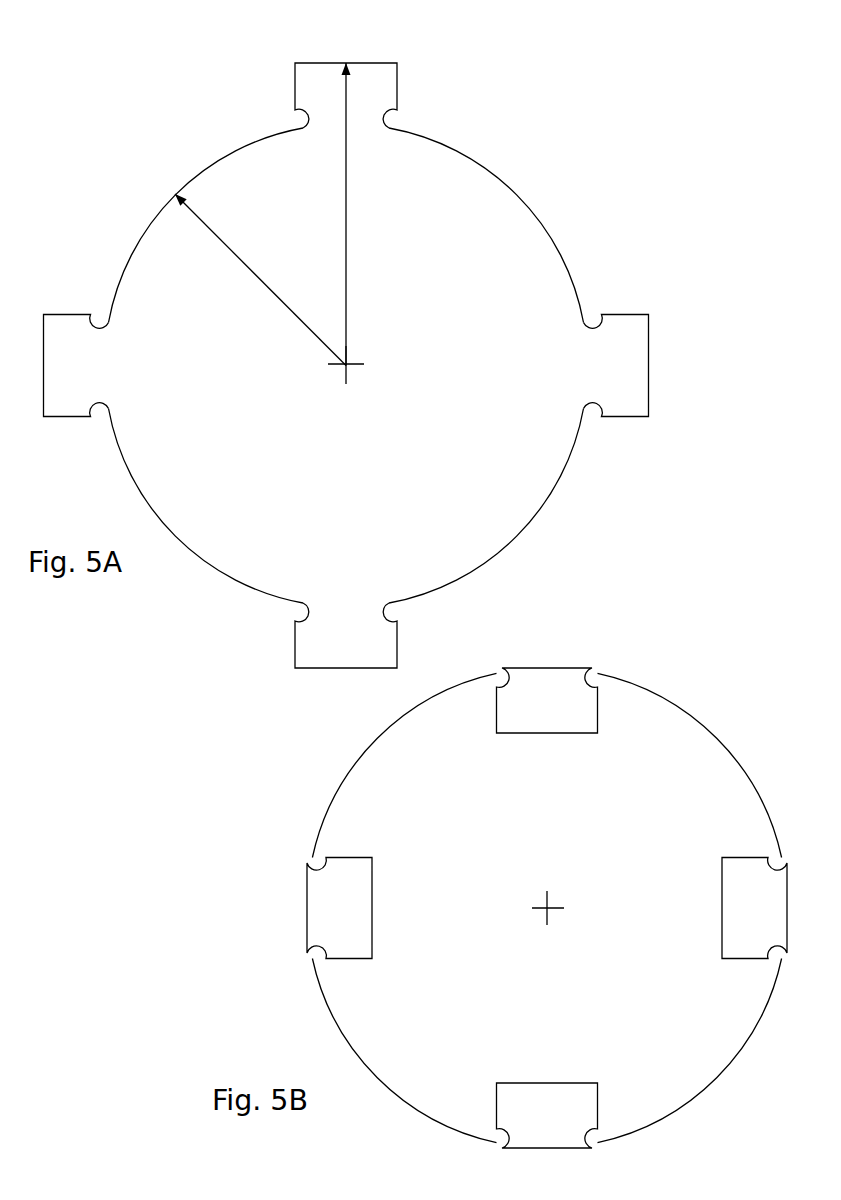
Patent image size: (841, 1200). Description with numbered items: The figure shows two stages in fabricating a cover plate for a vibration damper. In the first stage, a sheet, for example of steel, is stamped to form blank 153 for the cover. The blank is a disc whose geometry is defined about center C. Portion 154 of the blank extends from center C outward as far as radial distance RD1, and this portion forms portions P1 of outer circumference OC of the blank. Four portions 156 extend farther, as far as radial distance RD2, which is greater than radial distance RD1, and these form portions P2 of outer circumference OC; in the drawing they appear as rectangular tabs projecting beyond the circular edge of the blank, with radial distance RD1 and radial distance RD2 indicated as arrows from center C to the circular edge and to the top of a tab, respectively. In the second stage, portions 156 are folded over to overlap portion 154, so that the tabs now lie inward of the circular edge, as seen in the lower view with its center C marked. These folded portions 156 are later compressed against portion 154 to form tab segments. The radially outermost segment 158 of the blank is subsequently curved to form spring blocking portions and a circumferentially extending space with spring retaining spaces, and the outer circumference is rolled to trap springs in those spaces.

In FIG. 5A, the blank 153 is at (349, 343).
In FIG. 5B, the blank 153 is at (491, 859).
In FIG. 5A, the portion 154 is at (521, 207).
In FIG. 5B, the portion 154 is at (338, 907).
In FIG. 5A, the portions 156 is at (358, 73).
In FIG. 5B, the portions 156 is at (544, 706).
In FIG. 5B, the radially outermost segment 158 is at (380, 775).
In FIG. 5A, the outer circumference OC is at (381, 346).
In FIG. 5A, the portions of outer circumference P1 is at (432, 138).
In FIG. 5A, the portions of outer circumference P2 is at (323, 62).
In FIG. 5A, the radial distance RD1 is at (279, 300).
In FIG. 5A, the radial distance RD2 is at (348, 258).
In FIG. 5A, the center C is at (352, 358).
In FIG. 5B, the center C is at (549, 900).